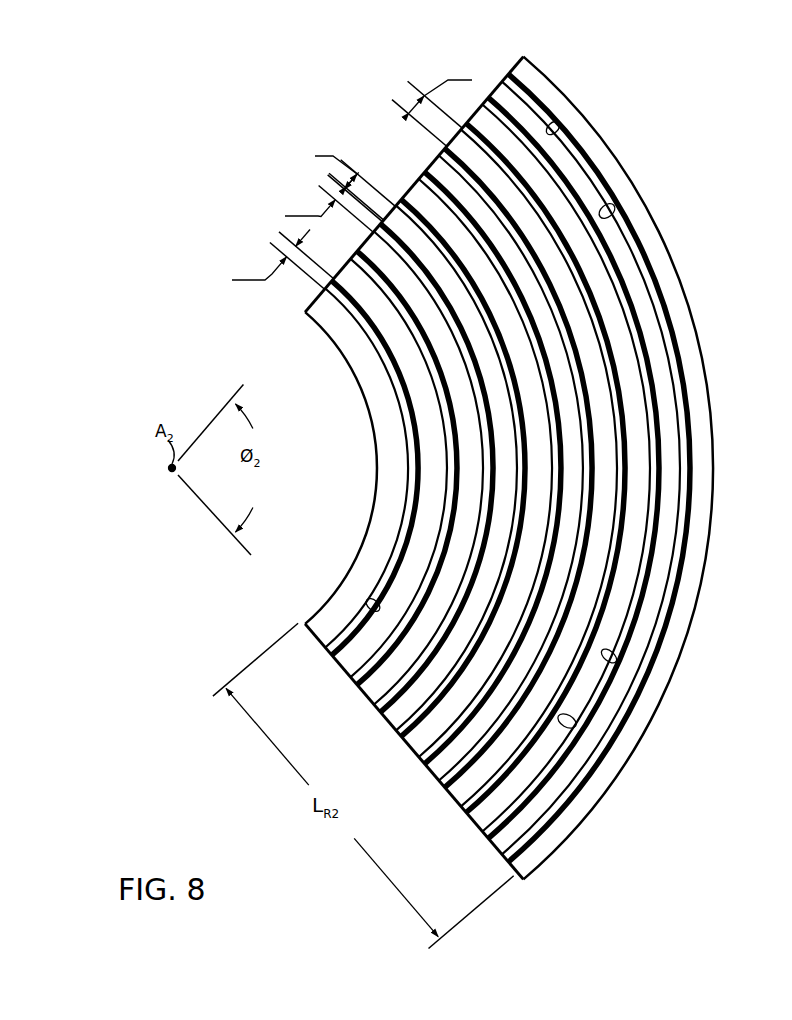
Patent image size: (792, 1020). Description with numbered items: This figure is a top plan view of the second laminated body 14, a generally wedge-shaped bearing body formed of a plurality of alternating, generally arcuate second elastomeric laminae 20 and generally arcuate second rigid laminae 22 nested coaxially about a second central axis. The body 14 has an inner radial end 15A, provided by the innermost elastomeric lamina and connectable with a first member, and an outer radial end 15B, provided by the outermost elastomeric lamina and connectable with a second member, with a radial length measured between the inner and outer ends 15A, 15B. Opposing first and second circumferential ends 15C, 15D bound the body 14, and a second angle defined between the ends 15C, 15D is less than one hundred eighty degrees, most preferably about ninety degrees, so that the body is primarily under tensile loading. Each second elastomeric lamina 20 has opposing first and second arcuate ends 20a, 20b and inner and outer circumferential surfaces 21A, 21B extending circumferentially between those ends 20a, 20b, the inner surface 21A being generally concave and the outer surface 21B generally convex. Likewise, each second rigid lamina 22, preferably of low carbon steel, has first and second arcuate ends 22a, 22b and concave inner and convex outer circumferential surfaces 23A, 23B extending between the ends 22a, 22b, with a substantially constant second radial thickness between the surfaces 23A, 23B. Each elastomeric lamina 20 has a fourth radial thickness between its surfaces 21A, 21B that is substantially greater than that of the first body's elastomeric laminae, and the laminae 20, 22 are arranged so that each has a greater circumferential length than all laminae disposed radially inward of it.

The second laminated body 14 is at (702, 126).
The inner radial end 15A is at (372, 487).
The outer radial end 15B is at (692, 631).
The first circumferential end 15C is at (446, 792).
The second circumferential end 15D is at (314, 284).
The second elastomeric laminae 20 is at (424, 432).
The first arcuate end 20a is at (367, 697).
The second arcuate end 20b is at (518, 58).
The inner circumferential surface 21A is at (574, 130).
The outer circumferential surface 21B is at (571, 100).
The second rigid laminae 22 is at (438, 388).
The first arcuate end 22a is at (324, 647).
The second arcuate end 22b is at (330, 277).
The inner circumferential surface 23A is at (631, 212).
The outer circumferential surface 23B is at (611, 188).